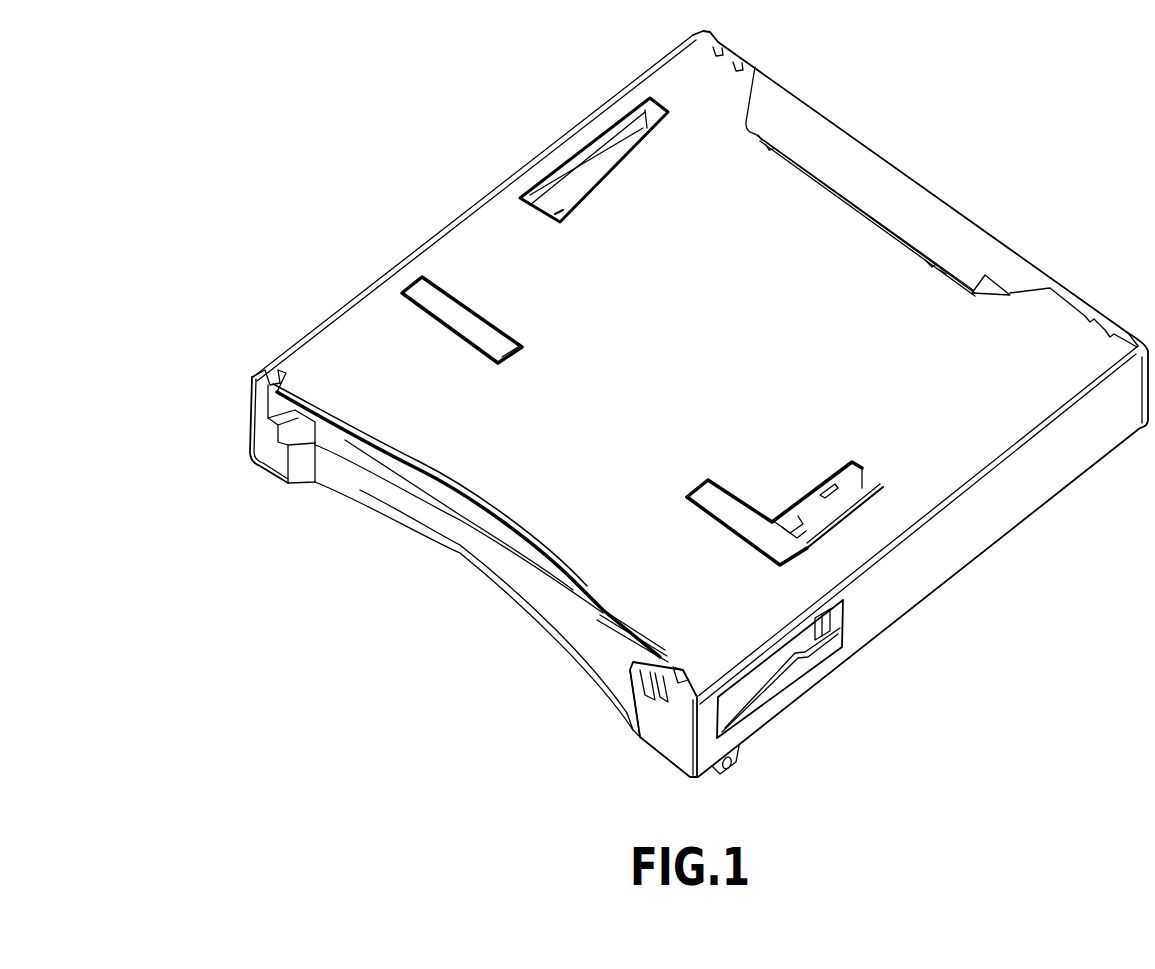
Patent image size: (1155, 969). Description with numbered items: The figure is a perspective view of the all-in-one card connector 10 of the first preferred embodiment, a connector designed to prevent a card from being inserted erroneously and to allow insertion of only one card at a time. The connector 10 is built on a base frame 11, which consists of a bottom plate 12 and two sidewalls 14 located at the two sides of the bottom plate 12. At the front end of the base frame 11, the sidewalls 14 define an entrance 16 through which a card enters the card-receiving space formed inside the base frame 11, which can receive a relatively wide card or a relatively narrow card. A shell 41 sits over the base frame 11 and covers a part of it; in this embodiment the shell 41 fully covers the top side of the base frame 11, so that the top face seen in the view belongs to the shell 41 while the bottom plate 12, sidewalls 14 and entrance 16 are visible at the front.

The all-in-one card connector 10 is at (354, 204).
The base frame 11 is at (257, 474).
The bottom plate 12 is at (414, 534).
The sidewalls 14 is at (258, 439).
The entrance 16 is at (443, 499).
The shell 41 is at (968, 429).